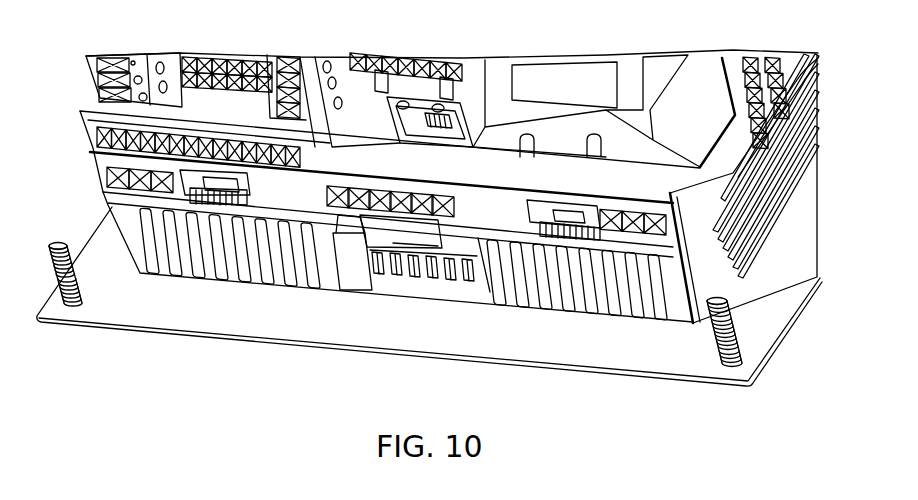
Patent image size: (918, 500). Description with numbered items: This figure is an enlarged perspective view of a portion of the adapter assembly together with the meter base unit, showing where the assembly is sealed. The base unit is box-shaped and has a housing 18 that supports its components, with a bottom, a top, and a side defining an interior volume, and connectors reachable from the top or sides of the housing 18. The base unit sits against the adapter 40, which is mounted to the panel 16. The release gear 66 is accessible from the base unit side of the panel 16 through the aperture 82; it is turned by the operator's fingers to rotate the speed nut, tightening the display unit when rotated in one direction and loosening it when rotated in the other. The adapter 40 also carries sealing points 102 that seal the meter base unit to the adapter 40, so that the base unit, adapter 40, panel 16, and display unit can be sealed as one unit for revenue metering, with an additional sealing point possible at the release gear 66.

The panel 16 is at (133, 307).
The housing 18 is at (182, 70).
The adapter 40 is at (784, 226).
The release gear 66 is at (408, 272).
The aperture 82 is at (484, 292).
The sealing points 102 is at (205, 192).